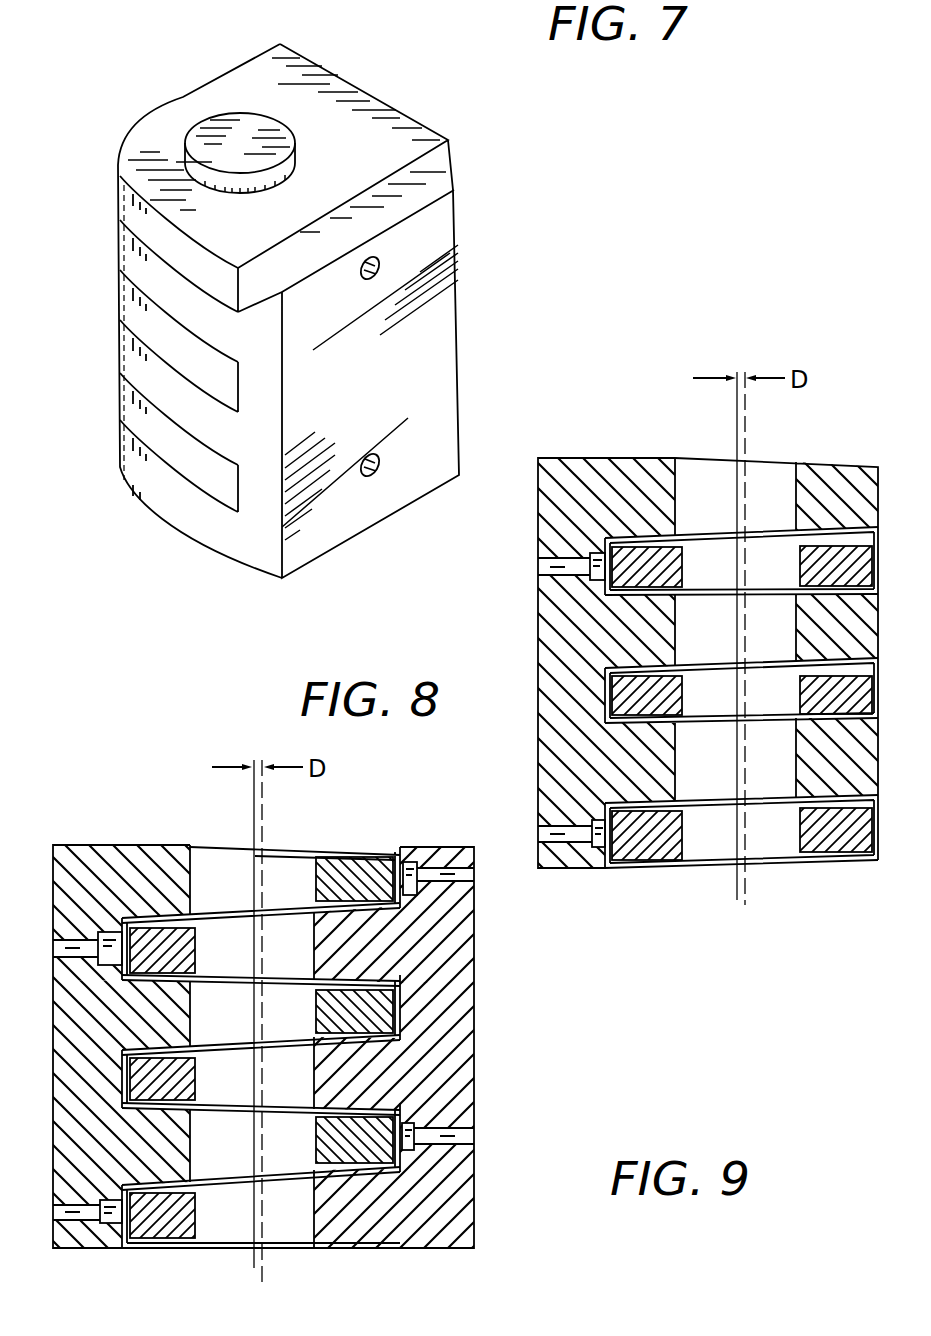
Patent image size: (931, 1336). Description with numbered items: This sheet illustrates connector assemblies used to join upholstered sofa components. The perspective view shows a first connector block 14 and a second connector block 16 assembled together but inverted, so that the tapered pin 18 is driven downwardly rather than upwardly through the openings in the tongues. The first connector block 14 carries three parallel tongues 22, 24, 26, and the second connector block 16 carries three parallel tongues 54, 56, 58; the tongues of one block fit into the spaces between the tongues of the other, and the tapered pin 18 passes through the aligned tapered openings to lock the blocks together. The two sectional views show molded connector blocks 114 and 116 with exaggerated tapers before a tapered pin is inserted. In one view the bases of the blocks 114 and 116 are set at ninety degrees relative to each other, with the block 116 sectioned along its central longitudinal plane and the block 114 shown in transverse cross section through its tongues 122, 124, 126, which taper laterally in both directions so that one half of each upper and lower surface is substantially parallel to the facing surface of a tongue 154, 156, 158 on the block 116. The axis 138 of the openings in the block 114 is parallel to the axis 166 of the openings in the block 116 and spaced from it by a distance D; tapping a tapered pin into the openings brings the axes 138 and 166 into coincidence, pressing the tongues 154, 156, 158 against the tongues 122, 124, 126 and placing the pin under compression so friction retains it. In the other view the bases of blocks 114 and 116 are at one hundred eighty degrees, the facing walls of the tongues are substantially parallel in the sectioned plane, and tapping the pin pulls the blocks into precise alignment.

In FIG. 7, the first connector block 14 is at (218, 537).
In FIG. 7, the second connector block 16 is at (409, 104).
In FIG. 7, the tapered pin 18 is at (242, 138).
In FIG. 7, the tongue 22 is at (140, 465).
In FIG. 7, the tongue 24 is at (147, 377).
In FIG. 7, the tongue 26 is at (147, 277).
In FIG. 7, the tongue 54 is at (145, 422).
In FIG. 7, the tongue 56 is at (148, 328).
In FIG. 7, the tongue 58 is at (140, 220).
In FIG. 8, the connector block 114 is at (490, 1012).
In FIG. 9, the connector block 114 is at (653, 877).
In FIG. 8, the connector block 116 is at (98, 838).
In FIG. 9, the connector block 116 is at (527, 545).
In FIG. 8, the tongue 122 is at (336, 1205).
In FIG. 9, the tongue 122 is at (823, 832).
In FIG. 8, the tongue 124 is at (326, 1067).
In FIG. 9, the tongue 124 is at (814, 695).
In FIG. 8, the tongue 126 is at (336, 940).
In FIG. 9, the tongue 126 is at (814, 568).
In FIG. 8, the axis 138 is at (262, 801).
In FIG. 9, the axis 138 is at (745, 411).
In FIG. 8, the tongue 154 is at (333, 1132).
In FIG. 9, the tongue 154 is at (818, 750).
In FIG. 8, the tongue 156 is at (331, 1010).
In FIG. 9, the tongue 156 is at (814, 625).
In FIG. 8, the tongue 158 is at (153, 845).
In FIG. 9, the tongue 158 is at (814, 505).
In FIG. 8, the axis 166 is at (254, 797).
In FIG. 9, the axis 166 is at (737, 411).